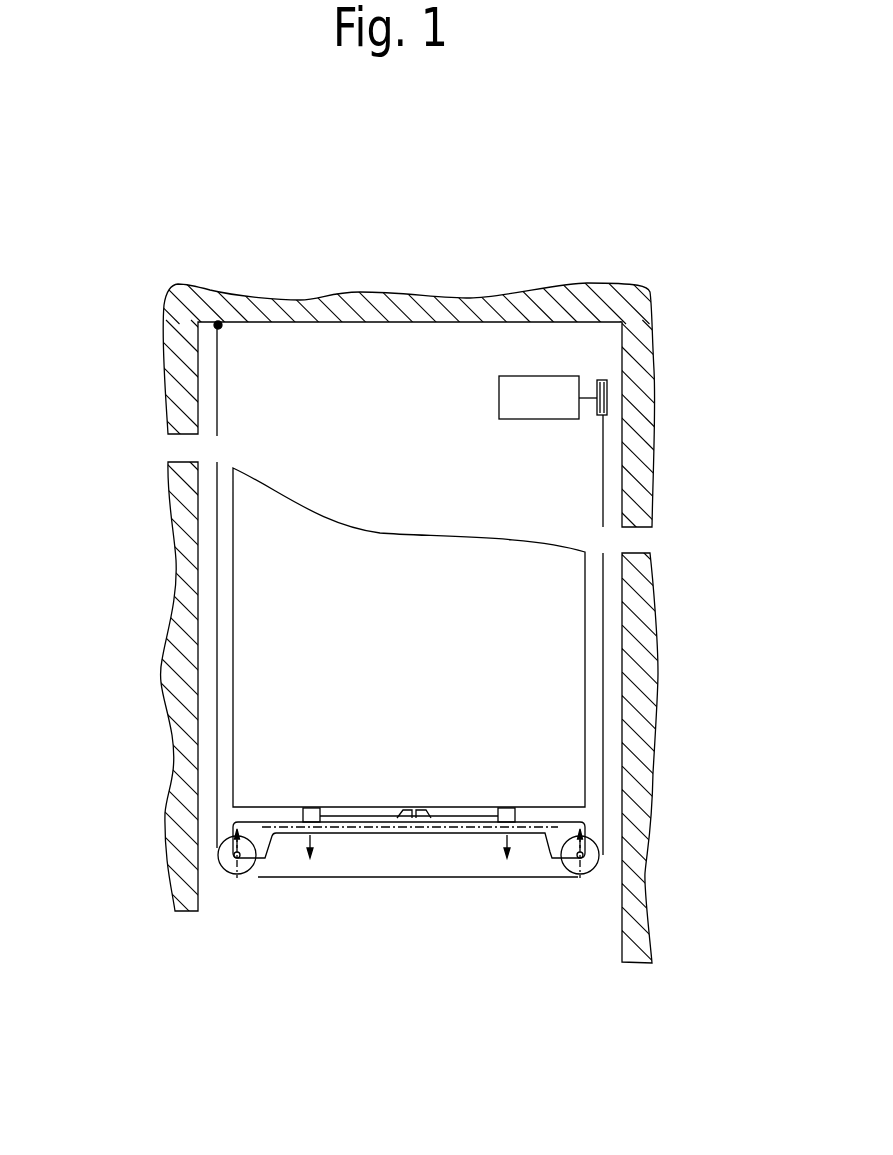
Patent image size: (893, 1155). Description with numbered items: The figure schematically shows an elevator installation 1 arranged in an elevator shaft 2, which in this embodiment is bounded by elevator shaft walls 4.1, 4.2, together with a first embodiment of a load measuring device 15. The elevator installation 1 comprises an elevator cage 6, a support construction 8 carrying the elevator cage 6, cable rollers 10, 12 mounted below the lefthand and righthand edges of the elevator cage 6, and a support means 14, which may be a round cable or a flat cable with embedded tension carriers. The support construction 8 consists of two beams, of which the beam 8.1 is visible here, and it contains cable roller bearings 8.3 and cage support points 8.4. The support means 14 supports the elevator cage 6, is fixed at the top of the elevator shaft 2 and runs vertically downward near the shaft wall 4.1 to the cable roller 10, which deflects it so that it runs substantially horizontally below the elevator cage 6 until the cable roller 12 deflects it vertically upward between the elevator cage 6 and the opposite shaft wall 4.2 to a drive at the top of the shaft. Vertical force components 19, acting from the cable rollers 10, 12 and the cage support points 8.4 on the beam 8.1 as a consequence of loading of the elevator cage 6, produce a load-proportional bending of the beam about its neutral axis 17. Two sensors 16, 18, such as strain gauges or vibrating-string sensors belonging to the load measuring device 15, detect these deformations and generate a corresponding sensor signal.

The elevator installation 1 is at (393, 258).
The elevator shaft 2 is at (207, 648).
The elevator shaft wall 4.1 is at (197, 511).
The elevator shaft wall 4.2 is at (656, 683).
The elevator cage 6 is at (273, 570).
The support construction 8 is at (352, 845).
The beam 8.1 is at (476, 825).
The cable roller bearings 8.3 is at (221, 860).
The cage support points 8.4 is at (305, 814).
The cable roller 10 is at (255, 853).
The cable roller 12 is at (597, 868).
The support means 14 is at (603, 575).
The load measuring device 15 is at (437, 812).
The sensor 16 is at (407, 820).
The neutral axis 17 is at (382, 827).
The sensor 18 is at (423, 822).
The vertical force components 19 is at (310, 835).